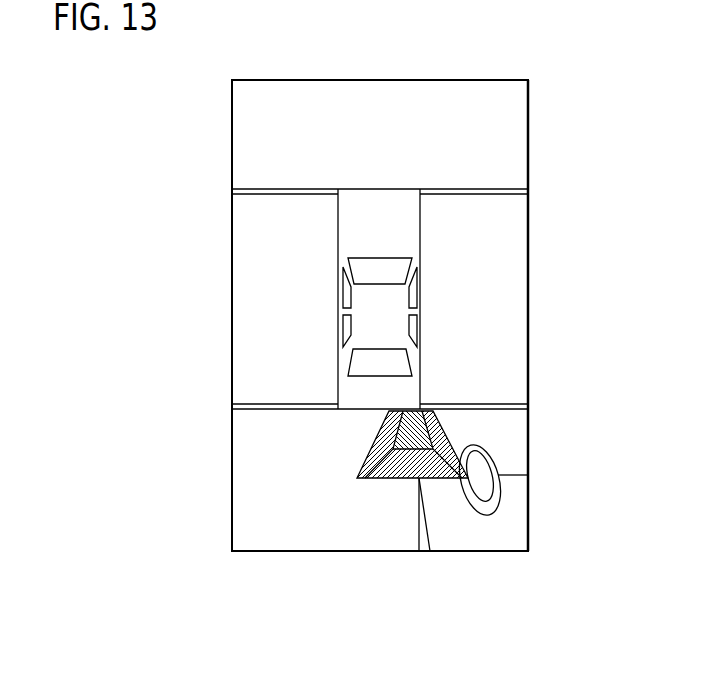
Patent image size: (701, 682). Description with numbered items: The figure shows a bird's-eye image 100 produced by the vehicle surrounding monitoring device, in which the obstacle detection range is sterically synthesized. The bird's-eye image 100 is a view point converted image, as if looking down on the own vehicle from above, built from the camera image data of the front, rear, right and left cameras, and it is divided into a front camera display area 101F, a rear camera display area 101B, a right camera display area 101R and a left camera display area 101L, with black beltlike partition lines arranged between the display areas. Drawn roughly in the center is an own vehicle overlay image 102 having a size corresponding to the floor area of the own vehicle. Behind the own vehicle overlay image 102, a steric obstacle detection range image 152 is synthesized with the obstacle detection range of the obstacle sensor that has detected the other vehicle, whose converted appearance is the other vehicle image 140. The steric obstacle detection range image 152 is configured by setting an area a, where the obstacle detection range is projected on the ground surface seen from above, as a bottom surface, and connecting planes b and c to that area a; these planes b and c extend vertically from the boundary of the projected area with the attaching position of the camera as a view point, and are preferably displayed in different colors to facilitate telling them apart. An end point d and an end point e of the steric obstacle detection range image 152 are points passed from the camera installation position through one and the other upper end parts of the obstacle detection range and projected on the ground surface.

The bird's-eye image 100 is at (498, 56).
The front camera display area 101F is at (292, 88).
The left camera display area 101L is at (250, 358).
The right camera display area 101R is at (513, 257).
The rear camera display area 101B is at (318, 538).
The own vehicle overlay image 102 is at (400, 393).
The other vehicle image 140 is at (490, 518).
The steric obstacle detection range image 152 is at (415, 503).
The area a is at (388, 418).
The plane b is at (427, 473).
The plane c is at (374, 445).
The end point d is at (483, 448).
The end point e is at (357, 478).